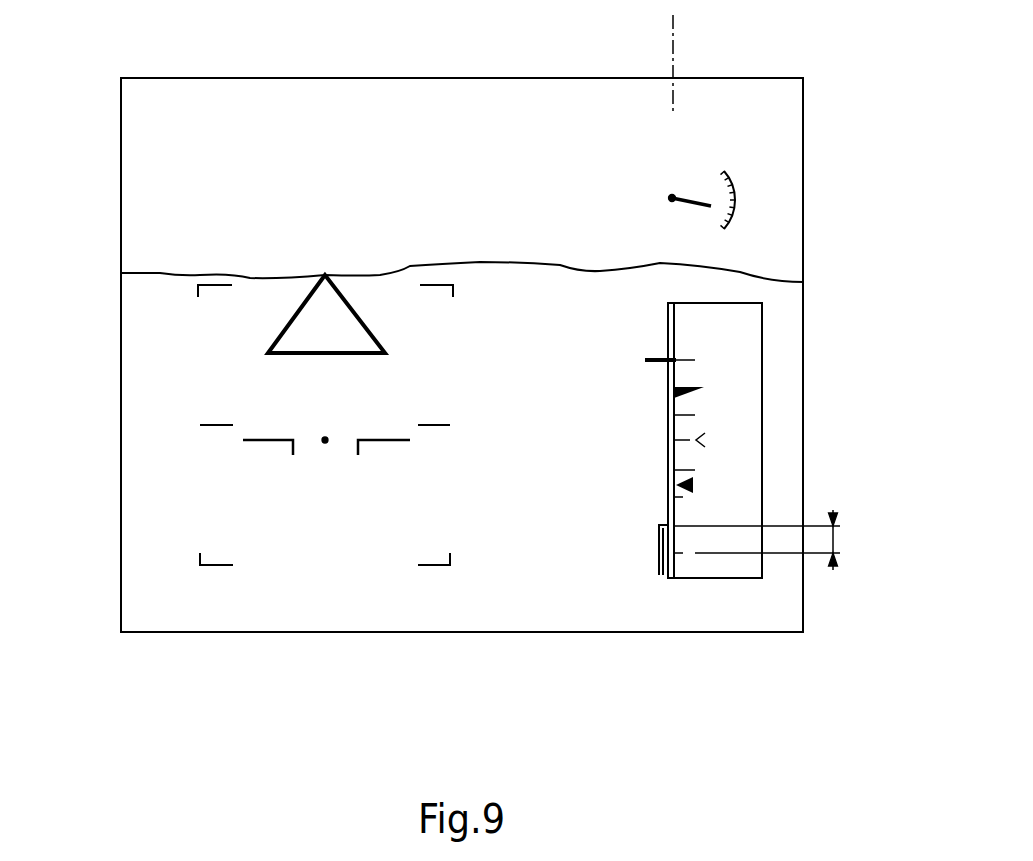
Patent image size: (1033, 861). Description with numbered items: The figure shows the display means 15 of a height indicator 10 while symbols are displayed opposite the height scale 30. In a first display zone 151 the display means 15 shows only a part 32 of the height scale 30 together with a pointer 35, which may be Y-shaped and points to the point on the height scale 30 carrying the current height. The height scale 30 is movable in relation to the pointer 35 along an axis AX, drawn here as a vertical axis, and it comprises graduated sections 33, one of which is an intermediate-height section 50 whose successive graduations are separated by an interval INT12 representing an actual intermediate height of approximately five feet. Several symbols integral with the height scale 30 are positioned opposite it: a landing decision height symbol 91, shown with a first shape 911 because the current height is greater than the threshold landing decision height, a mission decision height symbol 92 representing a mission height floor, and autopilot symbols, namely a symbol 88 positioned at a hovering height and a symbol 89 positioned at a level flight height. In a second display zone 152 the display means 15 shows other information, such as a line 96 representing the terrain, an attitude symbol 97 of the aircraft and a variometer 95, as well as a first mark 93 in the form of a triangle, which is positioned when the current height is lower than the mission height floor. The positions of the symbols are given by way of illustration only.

The display means 15 is at (776, 78).
The height indicator 10 is at (519, 320).
The first display zone 151 is at (770, 660).
The axis AX is at (673, 57).
The variometer 95 is at (742, 181).
The line representing the terrain 96 is at (160, 273).
The second display zone 152 is at (220, 314).
The first mark 93 is at (258, 334).
The attitude symbol 97 is at (148, 528).
The height scale 30 is at (793, 413).
The part of the height scale 32 is at (700, 333).
The mission decision height symbol 92 is at (660, 358).
The autopilot symbol positioned at a hovering height 88 is at (700, 398).
The pointer 35 is at (772, 440).
The autopilot symbol positioned at a level flight height 89 is at (703, 484).
The graduated section 33 is at (806, 509).
The intermediate-height section 50 is at (838, 469).
The interval INT12 is at (833, 540).
The landing decision height symbol 91 is at (590, 571).
The first shape 911 is at (658, 600).